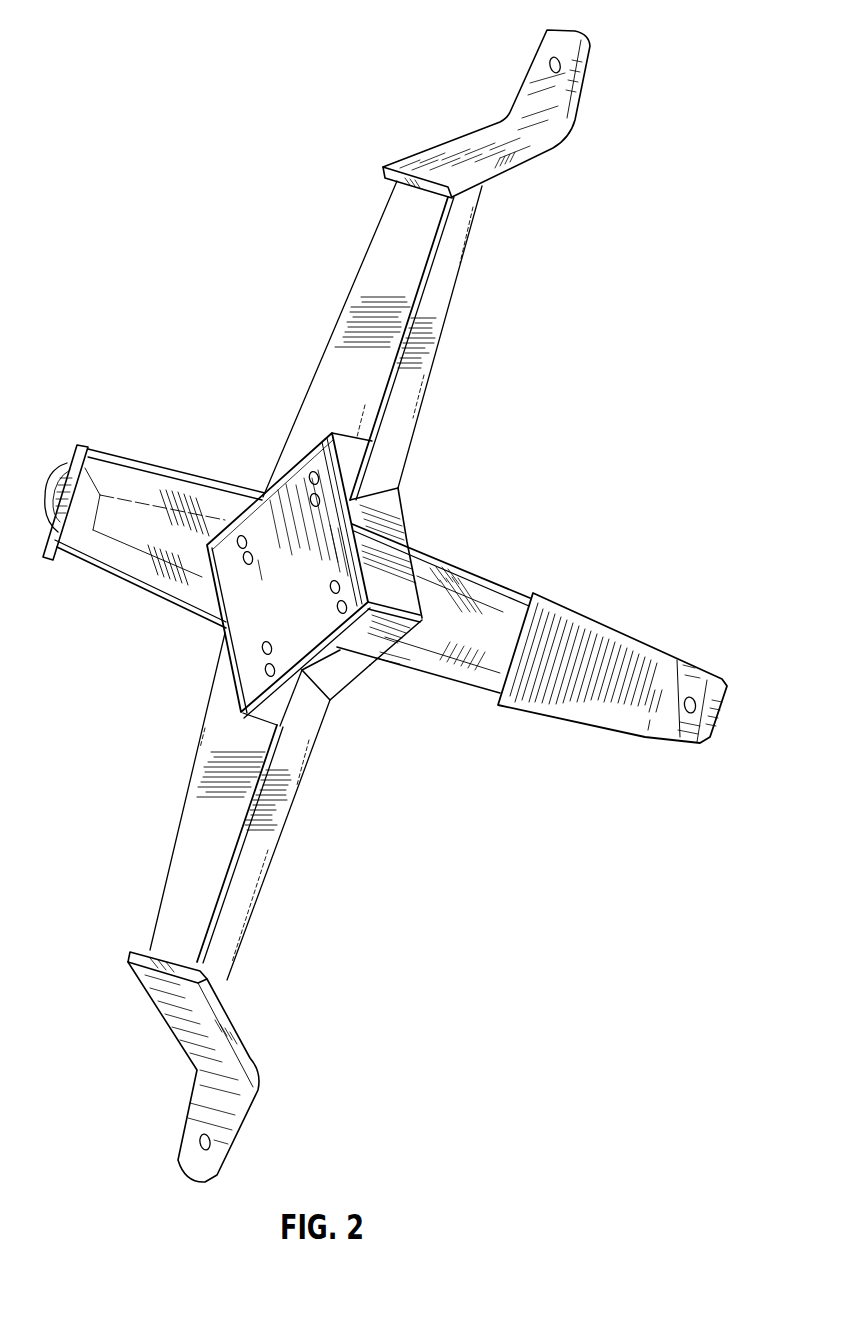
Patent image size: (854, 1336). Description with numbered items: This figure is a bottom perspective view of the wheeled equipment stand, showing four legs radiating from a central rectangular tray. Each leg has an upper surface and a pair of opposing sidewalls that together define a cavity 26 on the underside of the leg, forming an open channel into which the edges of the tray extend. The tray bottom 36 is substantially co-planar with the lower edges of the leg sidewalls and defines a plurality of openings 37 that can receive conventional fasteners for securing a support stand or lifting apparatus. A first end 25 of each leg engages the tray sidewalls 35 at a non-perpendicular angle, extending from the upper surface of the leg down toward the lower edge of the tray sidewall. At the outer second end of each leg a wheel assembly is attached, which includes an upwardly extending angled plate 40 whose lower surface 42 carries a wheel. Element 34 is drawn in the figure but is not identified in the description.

The first end 25 is at (400, 491).
The cavity 26 is at (340, 372).
The gusset bracket 34 is at (385, 582).
The tray sidewall 35 is at (393, 520).
The tray bottom 36 is at (245, 592).
The openings 37 is at (245, 530).
The angled plate 40 is at (603, 620).
The lower surface 42 is at (697, 684).